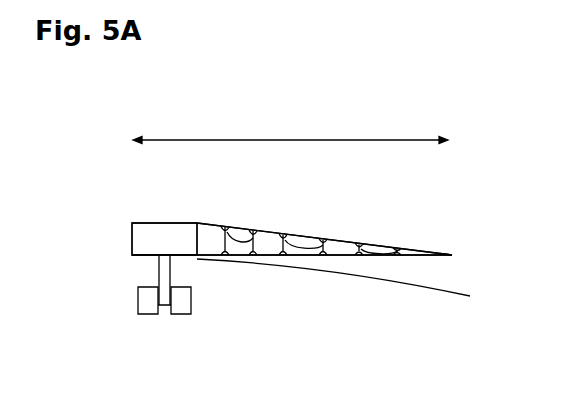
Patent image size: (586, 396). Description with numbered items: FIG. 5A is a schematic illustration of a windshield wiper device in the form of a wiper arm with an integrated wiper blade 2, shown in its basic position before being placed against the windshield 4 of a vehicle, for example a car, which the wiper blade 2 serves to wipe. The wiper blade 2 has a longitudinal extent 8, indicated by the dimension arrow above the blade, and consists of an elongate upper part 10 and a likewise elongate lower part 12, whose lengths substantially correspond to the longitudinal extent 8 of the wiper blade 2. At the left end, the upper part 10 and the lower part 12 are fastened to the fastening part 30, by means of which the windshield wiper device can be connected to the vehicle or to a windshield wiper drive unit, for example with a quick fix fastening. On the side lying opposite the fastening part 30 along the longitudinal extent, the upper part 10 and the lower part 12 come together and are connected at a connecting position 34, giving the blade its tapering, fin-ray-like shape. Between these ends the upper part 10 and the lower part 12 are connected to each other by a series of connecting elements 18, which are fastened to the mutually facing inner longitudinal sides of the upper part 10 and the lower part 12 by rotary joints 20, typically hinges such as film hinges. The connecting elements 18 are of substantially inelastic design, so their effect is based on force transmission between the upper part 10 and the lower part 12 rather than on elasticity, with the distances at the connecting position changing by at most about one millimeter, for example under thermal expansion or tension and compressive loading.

The wiper blade 2 is at (456, 178).
The windshield 4 is at (433, 293).
The longitudinal extent 8 is at (277, 140).
The upper part 10 is at (417, 252).
The lower part 12 is at (416, 257).
The connecting elements 18 is at (240, 238).
The rotary joints 20 is at (225, 227).
The fastening part 30 is at (132, 240).
The connecting position 34 is at (451, 254).